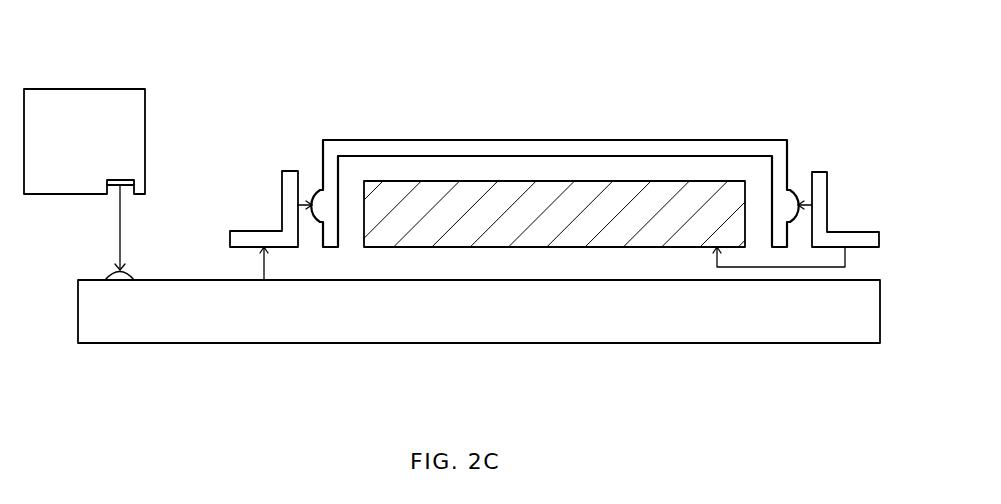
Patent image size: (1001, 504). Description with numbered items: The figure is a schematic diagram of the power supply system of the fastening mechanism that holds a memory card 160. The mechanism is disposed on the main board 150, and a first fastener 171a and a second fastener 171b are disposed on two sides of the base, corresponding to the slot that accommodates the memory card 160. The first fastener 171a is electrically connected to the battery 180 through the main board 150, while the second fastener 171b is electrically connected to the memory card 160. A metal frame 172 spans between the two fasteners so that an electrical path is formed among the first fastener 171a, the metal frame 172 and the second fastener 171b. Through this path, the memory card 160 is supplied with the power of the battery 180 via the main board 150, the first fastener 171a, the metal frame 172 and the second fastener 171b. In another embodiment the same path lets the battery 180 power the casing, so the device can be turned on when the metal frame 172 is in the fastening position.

The main board 150 is at (823, 344).
The memory card 160 is at (407, 181).
The first fastener 171a is at (290, 171).
The second fastener 171b is at (818, 178).
The metal frame 172 is at (483, 149).
The battery 180 is at (68, 89).